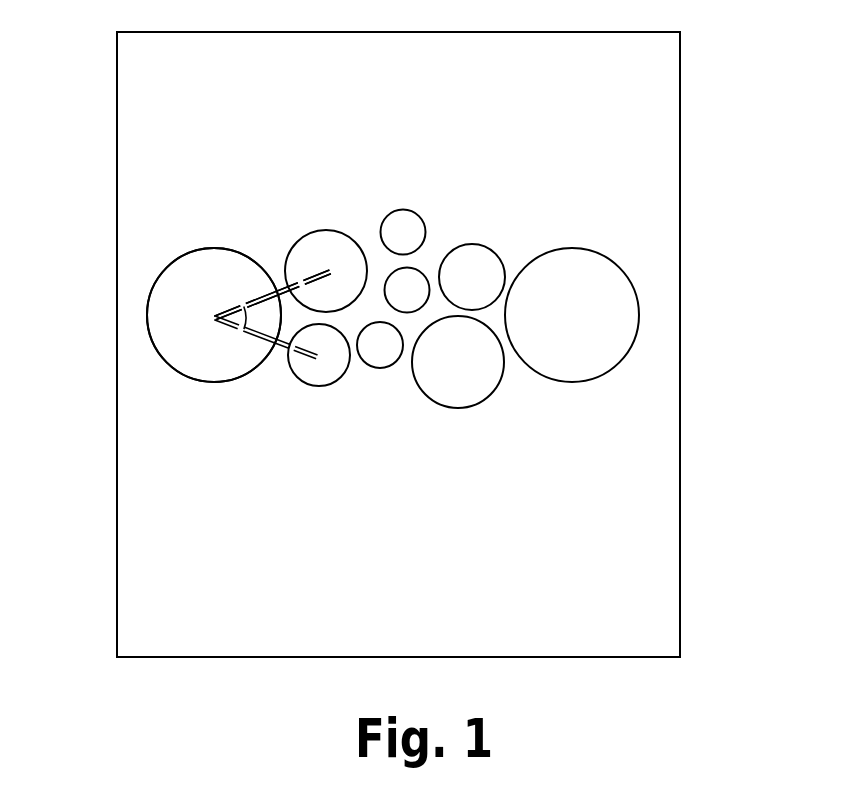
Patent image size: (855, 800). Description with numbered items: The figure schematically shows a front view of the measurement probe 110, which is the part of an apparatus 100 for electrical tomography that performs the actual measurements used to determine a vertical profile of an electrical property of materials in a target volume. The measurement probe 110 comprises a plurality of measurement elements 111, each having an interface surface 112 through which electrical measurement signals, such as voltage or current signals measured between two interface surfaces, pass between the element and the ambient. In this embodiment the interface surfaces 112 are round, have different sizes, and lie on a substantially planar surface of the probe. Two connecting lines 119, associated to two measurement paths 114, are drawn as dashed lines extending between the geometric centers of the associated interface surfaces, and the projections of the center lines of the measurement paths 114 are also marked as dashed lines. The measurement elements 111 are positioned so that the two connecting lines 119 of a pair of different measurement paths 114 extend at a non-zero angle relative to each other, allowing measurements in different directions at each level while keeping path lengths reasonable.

The apparatus 100 is at (398, 344).
The measurement probe 110 is at (595, 666).
The measurement element 111 is at (188, 380).
The interface surface 112 is at (192, 295).
The measurement path 114 is at (228, 306).
The connecting line 119 is at (249, 300).